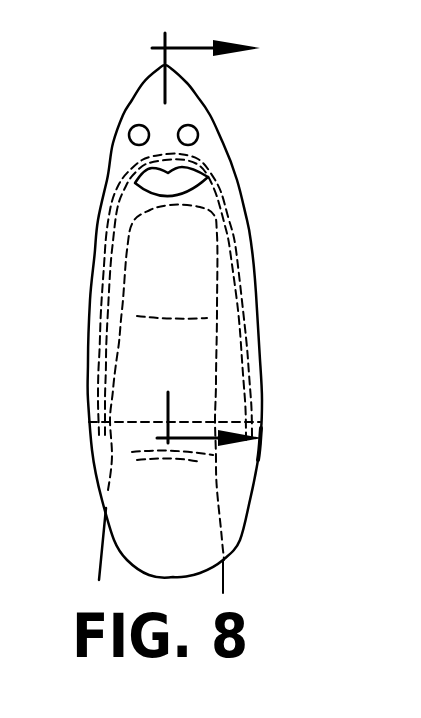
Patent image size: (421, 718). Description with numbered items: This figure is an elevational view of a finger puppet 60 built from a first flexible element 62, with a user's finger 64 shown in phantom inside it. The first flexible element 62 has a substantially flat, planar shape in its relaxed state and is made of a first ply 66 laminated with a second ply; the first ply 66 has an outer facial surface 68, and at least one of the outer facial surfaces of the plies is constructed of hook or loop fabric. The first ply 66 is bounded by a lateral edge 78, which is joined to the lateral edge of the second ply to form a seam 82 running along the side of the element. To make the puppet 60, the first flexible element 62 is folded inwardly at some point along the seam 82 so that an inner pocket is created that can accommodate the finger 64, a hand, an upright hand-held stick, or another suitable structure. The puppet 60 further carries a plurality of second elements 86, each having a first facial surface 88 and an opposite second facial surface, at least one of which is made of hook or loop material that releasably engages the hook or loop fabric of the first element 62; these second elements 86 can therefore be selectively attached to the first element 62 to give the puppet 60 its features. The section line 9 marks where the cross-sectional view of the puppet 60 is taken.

The section line 9 is at (207, 244).
The finger puppet 60 is at (248, 247).
The first flexible element 62 is at (250, 332).
The user's finger 64 is at (223, 579).
The first ply 66 is at (218, 213).
The outer facial surface of the first ply 68 is at (222, 231).
The lateral edge of the first ply 78 is at (97, 245).
The seam 82 is at (256, 273).
The second elements 86 is at (118, 136).
The first facial surface of a second element 88 is at (133, 126).